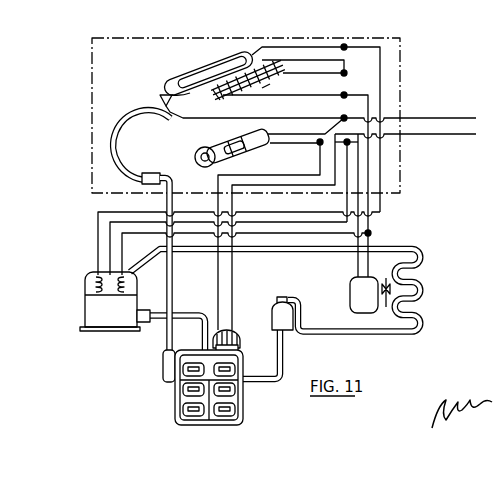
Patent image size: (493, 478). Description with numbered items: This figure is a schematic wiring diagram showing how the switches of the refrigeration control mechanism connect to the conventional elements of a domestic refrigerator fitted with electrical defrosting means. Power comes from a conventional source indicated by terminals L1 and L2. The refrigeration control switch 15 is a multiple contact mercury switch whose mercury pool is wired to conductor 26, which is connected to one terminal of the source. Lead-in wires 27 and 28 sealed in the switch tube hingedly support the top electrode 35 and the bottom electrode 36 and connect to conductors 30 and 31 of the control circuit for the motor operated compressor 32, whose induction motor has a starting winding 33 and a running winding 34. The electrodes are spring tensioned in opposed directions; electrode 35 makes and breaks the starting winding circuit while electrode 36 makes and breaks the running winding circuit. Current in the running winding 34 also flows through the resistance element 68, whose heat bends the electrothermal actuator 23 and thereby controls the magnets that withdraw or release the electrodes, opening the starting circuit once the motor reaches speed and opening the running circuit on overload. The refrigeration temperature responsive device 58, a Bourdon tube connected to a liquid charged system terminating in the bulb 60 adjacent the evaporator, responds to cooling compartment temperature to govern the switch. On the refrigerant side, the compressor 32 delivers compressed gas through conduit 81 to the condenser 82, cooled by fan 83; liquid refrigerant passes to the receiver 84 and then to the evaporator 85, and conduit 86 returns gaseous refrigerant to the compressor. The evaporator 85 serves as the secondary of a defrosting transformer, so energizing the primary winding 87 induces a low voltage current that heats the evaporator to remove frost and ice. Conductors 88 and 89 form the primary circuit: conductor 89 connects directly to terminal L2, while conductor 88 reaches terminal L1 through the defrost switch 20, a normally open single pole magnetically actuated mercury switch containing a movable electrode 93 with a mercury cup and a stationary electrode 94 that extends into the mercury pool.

The refrigeration control switch 15 is at (157, 88).
The defrost switch 20 is at (197, 158).
The electrothermal actuator 23 is at (288, 80).
The conductor 26 is at (307, 117).
The lead-in wire 27 is at (237, 50).
The lead-in wire 28 is at (246, 58).
The conductor 30 is at (384, 54).
The conductor 31 is at (370, 110).
The motor operated compressor 32 is at (100, 317).
The starting winding 33 is at (92, 288).
The running winding 34 is at (120, 291).
The top electrode 35 is at (198, 73).
The bottom electrode 36 is at (187, 89).
The refrigeration temperature responsive device 58 is at (110, 136).
The bulb 60 is at (163, 366).
The resistance element 68 is at (272, 81).
The conduit 81 is at (310, 251).
The condenser 82 is at (427, 271).
The fan 83 is at (356, 296).
The receiver 84 is at (290, 333).
The evaporator 85 is at (250, 404).
The conduit 86 is at (204, 316).
The primary winding 87 is at (240, 333).
The conductor 88 is at (216, 268).
The conductor 89 is at (238, 272).
The movable electrode 93 is at (226, 141).
The stationary electrode 94 is at (243, 151).
The terminal L1 is at (460, 110).
The terminal L2 is at (443, 135).